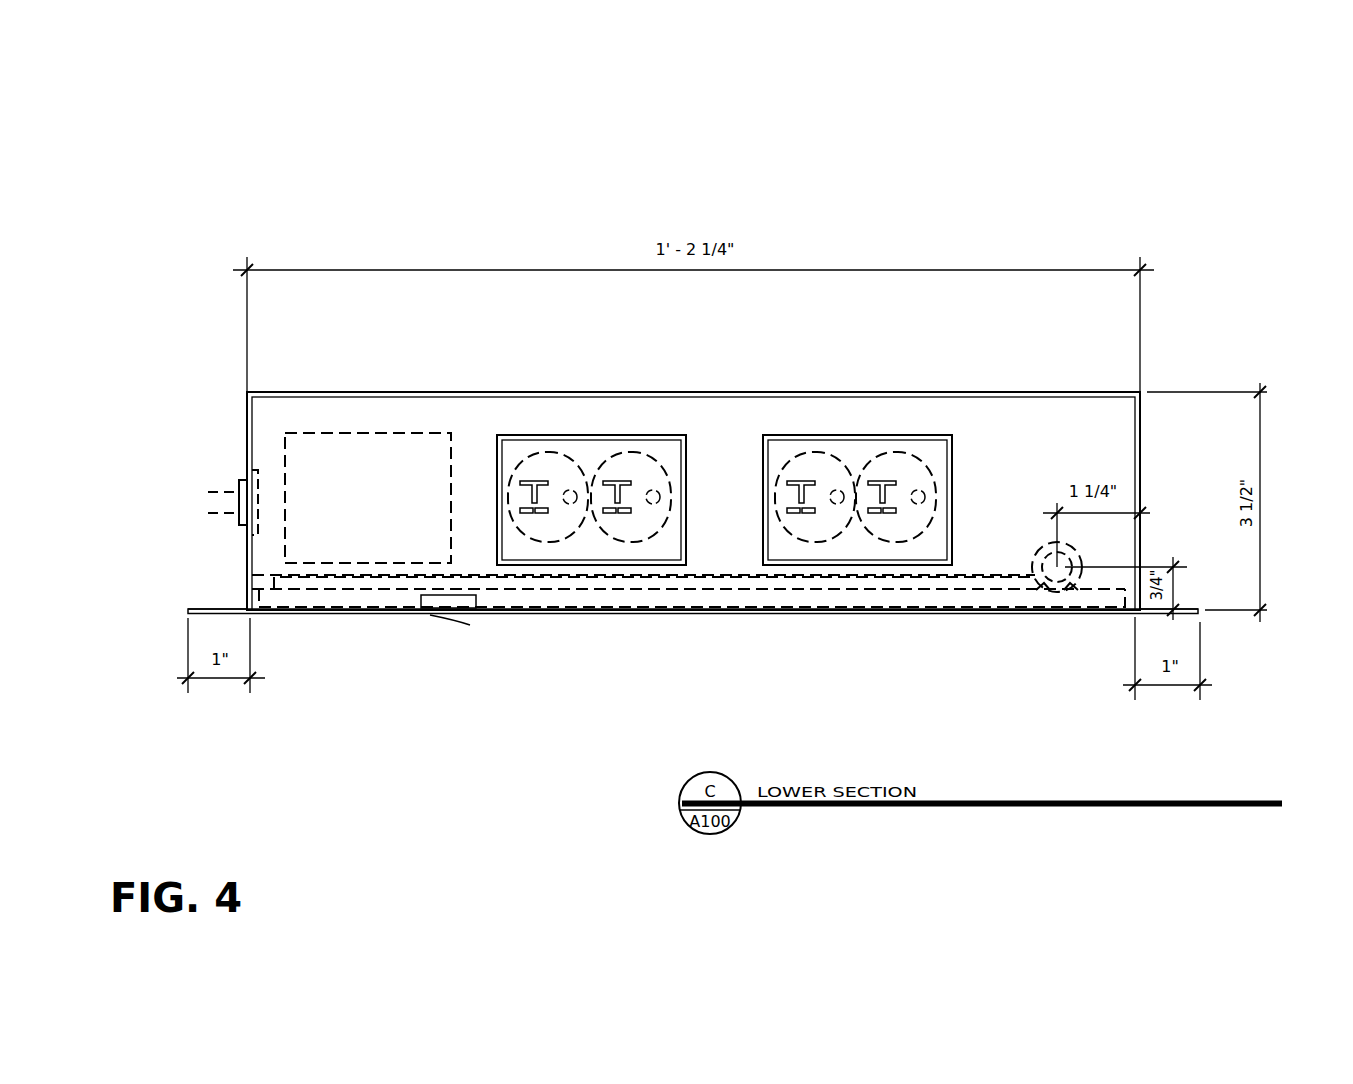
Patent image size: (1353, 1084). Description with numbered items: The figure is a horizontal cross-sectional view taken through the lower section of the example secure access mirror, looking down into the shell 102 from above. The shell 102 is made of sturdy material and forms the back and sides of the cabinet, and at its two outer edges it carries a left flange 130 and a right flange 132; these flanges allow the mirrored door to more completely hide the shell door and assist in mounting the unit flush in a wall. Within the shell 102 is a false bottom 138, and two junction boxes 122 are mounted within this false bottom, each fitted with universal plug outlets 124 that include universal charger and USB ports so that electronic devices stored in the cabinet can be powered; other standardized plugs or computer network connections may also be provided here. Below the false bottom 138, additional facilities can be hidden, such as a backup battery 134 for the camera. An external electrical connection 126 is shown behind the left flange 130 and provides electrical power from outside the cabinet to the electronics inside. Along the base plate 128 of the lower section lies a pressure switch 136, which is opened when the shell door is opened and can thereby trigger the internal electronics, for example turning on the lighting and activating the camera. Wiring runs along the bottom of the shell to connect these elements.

The shell 102 is at (533, 390).
The junction box 122 is at (1002, 423).
The universal plug outlet 124 is at (920, 330).
The external electrical connection 126 is at (205, 472).
The base plate 128 is at (312, 630).
The left flange 130 is at (222, 598).
The right flange 132 is at (1203, 599).
The backup battery 134 is at (368, 330).
The pressure switch 136 is at (502, 626).
The false bottom 138 is at (636, 405).